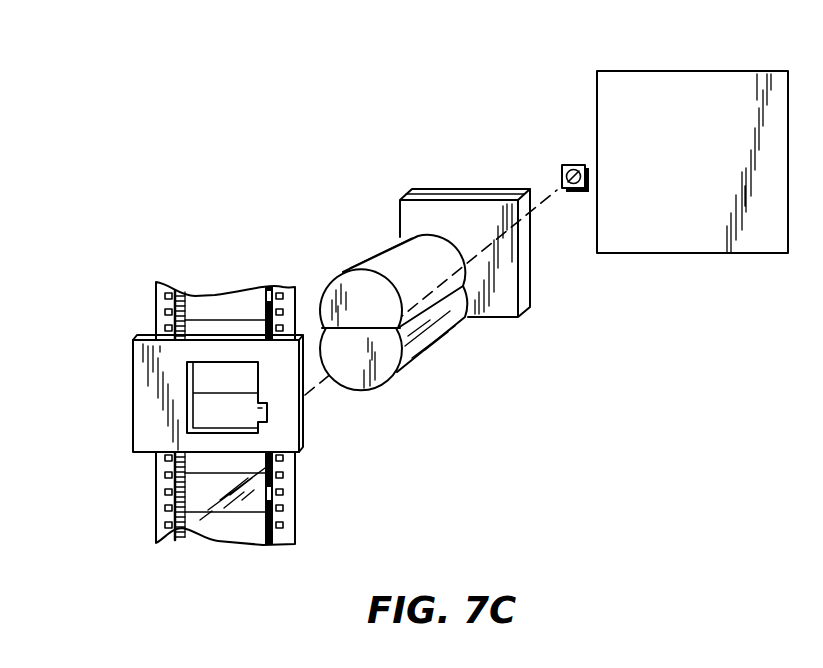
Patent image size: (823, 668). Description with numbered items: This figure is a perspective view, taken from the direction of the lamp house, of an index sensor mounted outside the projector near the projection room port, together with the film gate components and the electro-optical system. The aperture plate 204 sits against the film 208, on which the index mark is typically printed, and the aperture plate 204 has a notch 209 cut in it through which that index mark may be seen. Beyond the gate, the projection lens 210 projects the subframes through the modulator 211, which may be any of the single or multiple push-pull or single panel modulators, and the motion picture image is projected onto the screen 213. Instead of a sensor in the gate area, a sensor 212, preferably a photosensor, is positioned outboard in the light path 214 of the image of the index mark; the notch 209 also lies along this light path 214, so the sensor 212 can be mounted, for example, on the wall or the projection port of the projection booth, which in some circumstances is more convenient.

The aperture plate 204 is at (133, 408).
The film 208 is at (207, 530).
The notch 209 is at (268, 421).
The projection lens 210 is at (356, 268).
The modulator 211 is at (463, 194).
The sensor 212 is at (562, 165).
The screen 213 is at (698, 70).
The light path 214 is at (545, 202).